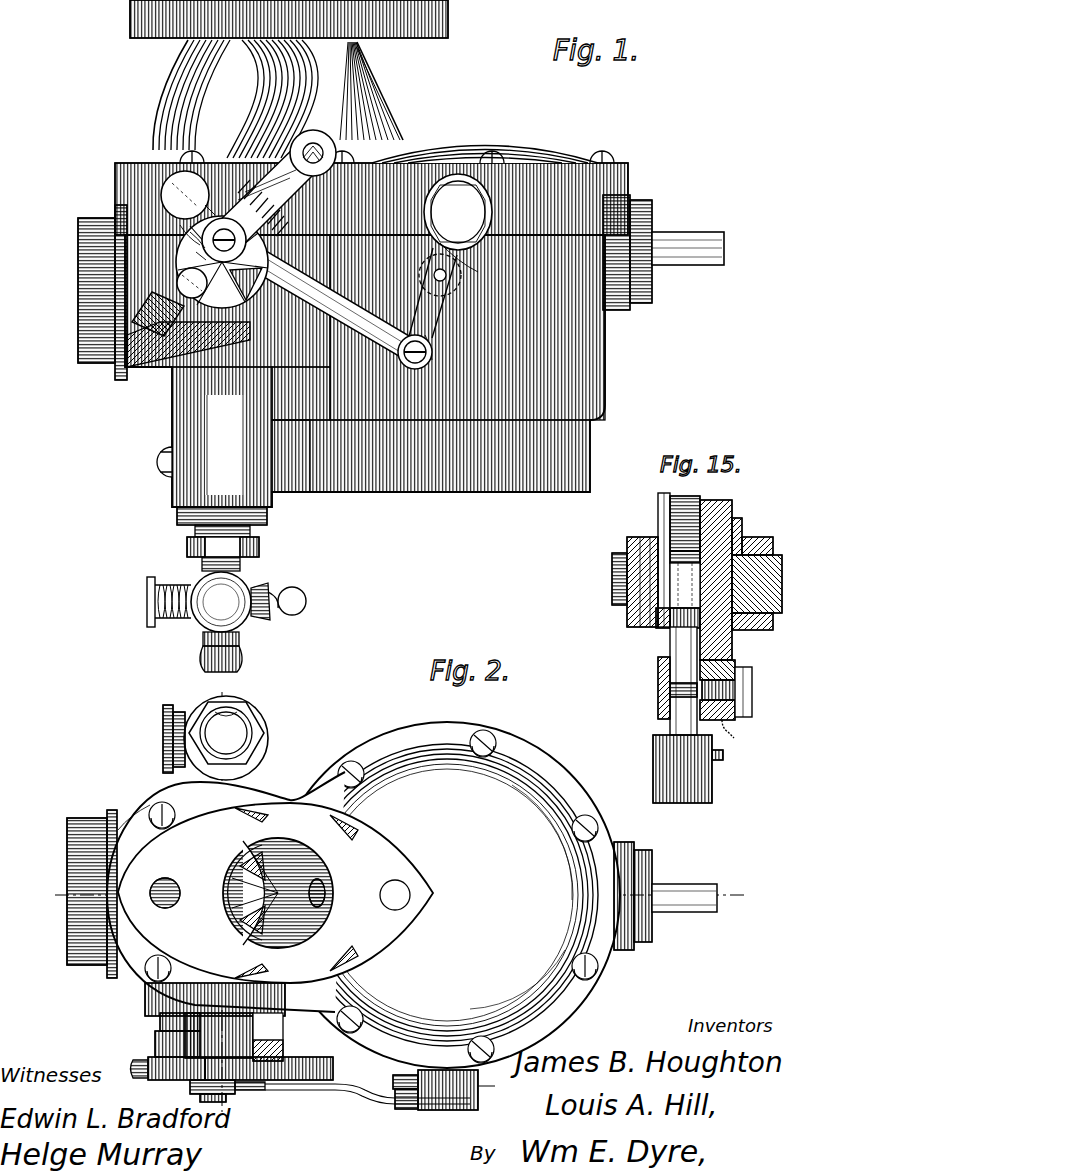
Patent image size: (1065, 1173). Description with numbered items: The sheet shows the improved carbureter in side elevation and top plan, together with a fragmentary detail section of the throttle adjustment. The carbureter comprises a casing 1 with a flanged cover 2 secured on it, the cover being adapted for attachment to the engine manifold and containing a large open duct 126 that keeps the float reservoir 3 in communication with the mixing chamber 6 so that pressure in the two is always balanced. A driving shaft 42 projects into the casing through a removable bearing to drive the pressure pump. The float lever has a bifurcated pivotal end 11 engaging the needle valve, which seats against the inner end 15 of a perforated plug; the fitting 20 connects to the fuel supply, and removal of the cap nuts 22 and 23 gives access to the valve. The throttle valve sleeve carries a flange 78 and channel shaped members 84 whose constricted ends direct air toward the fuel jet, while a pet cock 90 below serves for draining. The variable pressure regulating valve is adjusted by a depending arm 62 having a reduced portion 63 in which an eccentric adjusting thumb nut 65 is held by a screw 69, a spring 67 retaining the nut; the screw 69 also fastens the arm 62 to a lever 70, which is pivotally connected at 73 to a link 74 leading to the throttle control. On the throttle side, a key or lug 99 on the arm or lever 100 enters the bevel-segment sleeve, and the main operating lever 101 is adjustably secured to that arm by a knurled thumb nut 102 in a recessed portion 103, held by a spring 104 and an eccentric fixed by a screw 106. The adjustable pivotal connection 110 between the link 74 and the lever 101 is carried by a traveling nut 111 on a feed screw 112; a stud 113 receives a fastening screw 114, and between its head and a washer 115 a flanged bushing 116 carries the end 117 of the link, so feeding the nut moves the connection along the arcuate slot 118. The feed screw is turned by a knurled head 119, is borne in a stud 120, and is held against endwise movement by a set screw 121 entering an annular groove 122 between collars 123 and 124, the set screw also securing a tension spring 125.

In FIG. 1, the casing 1 is at (172, 418).
In FIG. 2, the casing 1 is at (312, 765).
In FIG. 1, the flanged cover 2 is at (447, 152).
In FIG. 2, the flanged cover 2 is at (400, 748).
In FIG. 2, the float reservoir 3 is at (393, 900).
In FIG. 2, the mixing chamber 6 is at (218, 896).
In FIG. 1, the pivotal end 11 is at (162, 178).
In FIG. 1, the inner end 15 is at (204, 286).
In FIG. 1, the fitting 20 is at (262, 534).
In FIG. 2, the fitting 20 is at (163, 748).
In FIG. 2, the cap nut 22 is at (250, 742).
In FIG. 2, the cap nut 23 is at (268, 762).
In FIG. 1, the driving shaft 42 is at (676, 244).
In FIG. 2, the driving shaft 42 is at (672, 895).
In FIG. 1, the depending arm 62 is at (431, 243).
In FIG. 1, the reduced portion 63 is at (440, 322).
In FIG. 1, the adjusting thumb nut 65 is at (458, 292).
In FIG. 2, the adjusting thumb nut 65 is at (432, 1113).
In FIG. 1, the spring 67 is at (466, 262).
In FIG. 1, the screw 69 is at (434, 275).
In FIG. 1, the lever 70 is at (436, 340).
In FIG. 2, the lever 70 is at (393, 1083).
In FIG. 1, the pivotal connection 73 is at (432, 352).
In FIG. 2, the pivotal connection 73 is at (398, 1108).
In FIG. 1, the link 74 is at (383, 338).
In FIG. 15, the link 74 is at (640, 606).
In FIG. 2, the link 74 is at (350, 1092).
In FIG. 2, the flange 78 is at (268, 900).
In FIG. 2, the channel shaped members 84 is at (256, 862).
In FIG. 1, the pet cock 90 is at (260, 586).
In FIG. 15, the key or lug 99 is at (761, 572).
In FIG. 15, the arm or lever 100 is at (734, 642).
In FIG. 2, the arm or lever 100 is at (155, 1038).
In FIG. 1, the main operating lever 101 is at (322, 186).
In FIG. 15, the main operating lever 101 is at (720, 520).
In FIG. 2, the main operating lever 101 is at (300, 1088).
In FIG. 1, the knurled thumb nut 102 is at (185, 182).
In FIG. 2, the knurled thumb nut 102 is at (175, 1082).
In FIG. 1, the recessed portion 103 is at (217, 200).
In FIG. 1, the spring 104 is at (175, 234).
In FIG. 2, the spring 104 is at (212, 1070).
In FIG. 2, the screw 106 is at (160, 1022).
In FIG. 1, the adjustable pivotal connection 110 is at (196, 250).
In FIG. 15, the adjustable pivotal connection 110 is at (630, 549).
In FIG. 15, the traveling nut 111 is at (758, 539).
In FIG. 1, the feed screw 112 is at (262, 202).
In FIG. 15, the feed screw 112 is at (692, 508).
In FIG. 15, the stud 113 is at (666, 628).
In FIG. 1, the fastening screw 114 is at (222, 262).
In FIG. 15, the fastening screw 114 is at (614, 578).
In FIG. 1, the washer 115 is at (195, 262).
In FIG. 15, the washer 115 is at (636, 540).
In FIG. 2, the washer 115 is at (201, 1105).
In FIG. 15, the flanged bushing 116 is at (655, 622).
In FIG. 15, the end of link 117 is at (640, 536).
In FIG. 1, the arcuate slot 118 is at (305, 170).
In FIG. 15, the arcuate slot 118 is at (665, 500).
In FIG. 1, the knurled head 119 is at (176, 325).
In FIG. 15, the knurled head 119 is at (712, 786).
In FIG. 2, the knurled head 119 is at (138, 1067).
In FIG. 1, the stud 120 is at (177, 284).
In FIG. 15, the stud 120 is at (744, 666).
In FIG. 15, the set screw 121 is at (748, 694).
In FIG. 15, the annular groove 122 is at (666, 691).
In FIG. 15, the collar or shoulder 123 is at (670, 678).
In FIG. 15, the collar or shoulder 124 is at (668, 704).
In FIG. 15, the tension spring 125 is at (732, 735).
In FIG. 2, the open duct 126 is at (323, 903).